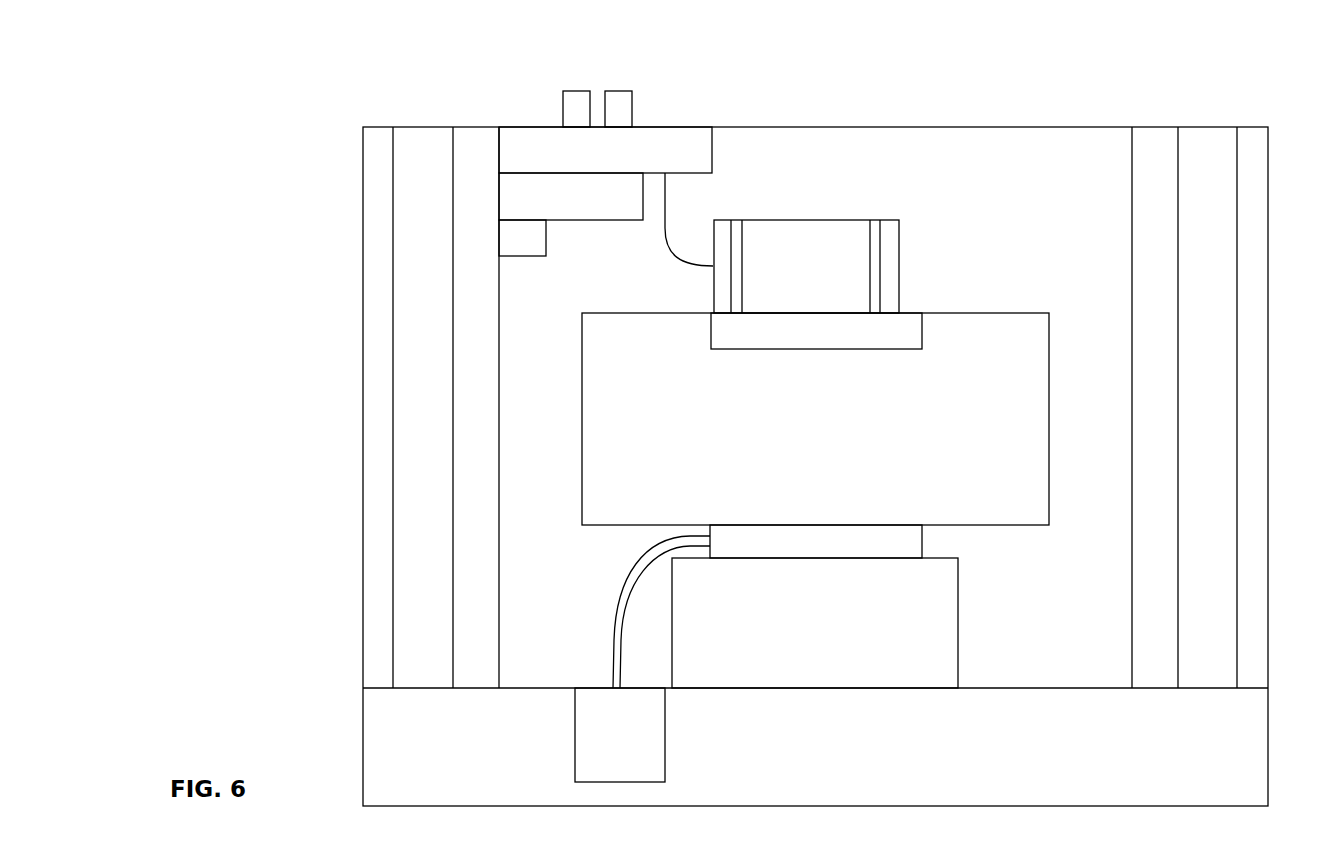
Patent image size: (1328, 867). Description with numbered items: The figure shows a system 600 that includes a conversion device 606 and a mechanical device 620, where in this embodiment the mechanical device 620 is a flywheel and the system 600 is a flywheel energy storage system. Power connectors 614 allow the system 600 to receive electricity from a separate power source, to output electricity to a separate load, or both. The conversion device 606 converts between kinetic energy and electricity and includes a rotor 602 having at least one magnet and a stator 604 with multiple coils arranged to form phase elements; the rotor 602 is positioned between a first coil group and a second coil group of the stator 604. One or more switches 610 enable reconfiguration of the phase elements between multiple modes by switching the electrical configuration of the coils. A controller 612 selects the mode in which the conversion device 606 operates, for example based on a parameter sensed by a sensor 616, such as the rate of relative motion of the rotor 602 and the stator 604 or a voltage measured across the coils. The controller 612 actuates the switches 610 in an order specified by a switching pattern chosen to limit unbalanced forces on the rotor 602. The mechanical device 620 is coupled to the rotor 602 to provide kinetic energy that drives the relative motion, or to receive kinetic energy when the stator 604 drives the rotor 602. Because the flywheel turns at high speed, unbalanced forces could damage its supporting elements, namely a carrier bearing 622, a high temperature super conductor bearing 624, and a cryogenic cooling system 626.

The system 600 is at (343, 57).
The rotor 602 is at (808, 225).
The stator 604 is at (893, 247).
The conversion device 606 is at (868, 229).
The switches 610 is at (693, 127).
The controller 612 is at (578, 220).
The power connectors 614 is at (631, 90).
The sensor 616 is at (546, 249).
The mechanical device 620 is at (606, 312).
The carrier bearing 622 is at (738, 350).
The high temperature super conductor bearing 624 is at (772, 522).
The cryogenic cooling system 626 is at (574, 743).